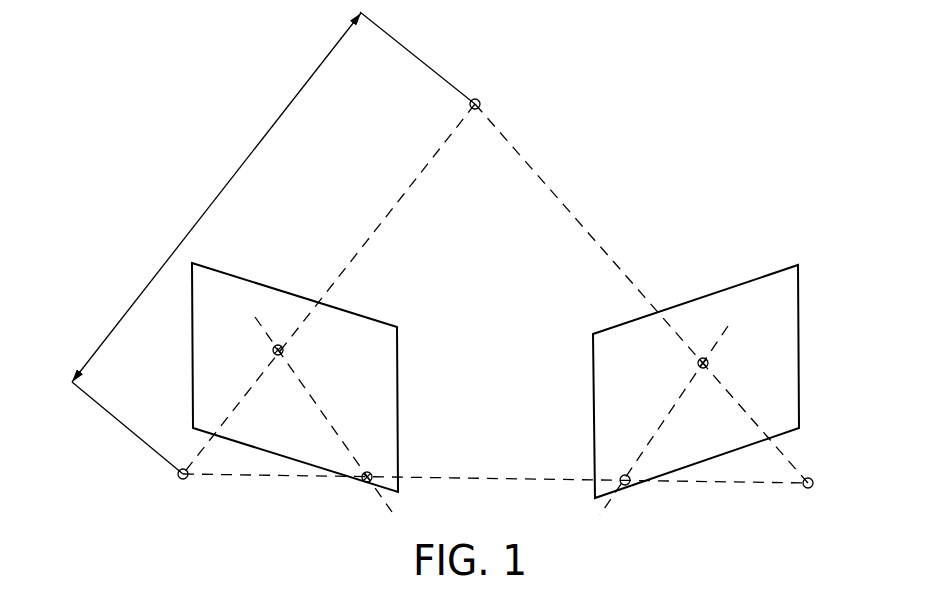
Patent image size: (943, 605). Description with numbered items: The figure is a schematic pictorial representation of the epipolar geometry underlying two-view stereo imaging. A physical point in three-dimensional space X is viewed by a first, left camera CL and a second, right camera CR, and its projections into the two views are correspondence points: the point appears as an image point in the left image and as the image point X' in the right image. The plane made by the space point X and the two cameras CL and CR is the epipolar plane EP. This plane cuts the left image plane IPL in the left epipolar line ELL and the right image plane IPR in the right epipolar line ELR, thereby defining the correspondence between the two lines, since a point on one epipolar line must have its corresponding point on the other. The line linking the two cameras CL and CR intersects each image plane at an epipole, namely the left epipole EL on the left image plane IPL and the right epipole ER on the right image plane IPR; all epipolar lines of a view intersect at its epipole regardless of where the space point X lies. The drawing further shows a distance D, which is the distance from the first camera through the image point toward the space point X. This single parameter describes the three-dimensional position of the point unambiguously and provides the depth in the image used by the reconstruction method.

The point in 3D space X is at (445, 256).
The image point in second image X' is at (736, 284).
The distance D is at (273, 243).
The epipolar plane EP is at (470, 263).
The left camera CL is at (175, 482).
The right camera CR is at (805, 500).
The left image plane IPL is at (258, 418).
The right image plane IPR is at (722, 430).
The left epipolar line ELL is at (318, 410).
The right epipolar line ELR is at (673, 428).
The left epipole EL is at (362, 484).
The right epipole ER is at (633, 492).